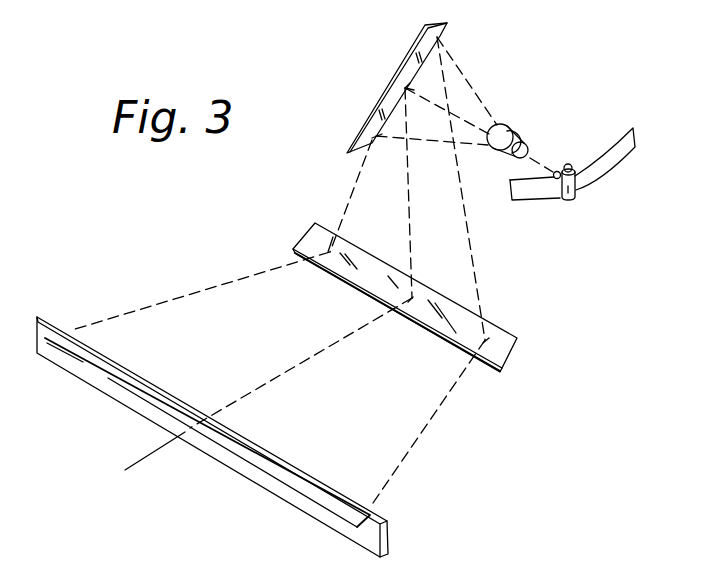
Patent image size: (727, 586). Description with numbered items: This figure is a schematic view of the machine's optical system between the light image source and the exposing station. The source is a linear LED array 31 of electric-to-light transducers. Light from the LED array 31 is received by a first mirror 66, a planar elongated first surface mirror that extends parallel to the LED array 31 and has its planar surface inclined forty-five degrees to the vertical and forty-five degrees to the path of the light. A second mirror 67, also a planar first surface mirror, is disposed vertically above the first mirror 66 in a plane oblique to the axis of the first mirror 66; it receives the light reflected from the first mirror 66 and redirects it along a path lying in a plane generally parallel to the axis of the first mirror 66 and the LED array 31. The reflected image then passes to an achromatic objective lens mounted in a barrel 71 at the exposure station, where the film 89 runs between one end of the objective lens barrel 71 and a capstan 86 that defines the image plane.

The LED array 31 is at (342, 522).
The first mirror 66 is at (500, 338).
The second mirror 67 is at (373, 123).
The objective lens barrel 71 is at (513, 131).
The capstan 86 is at (567, 202).
The film 89 is at (603, 167).